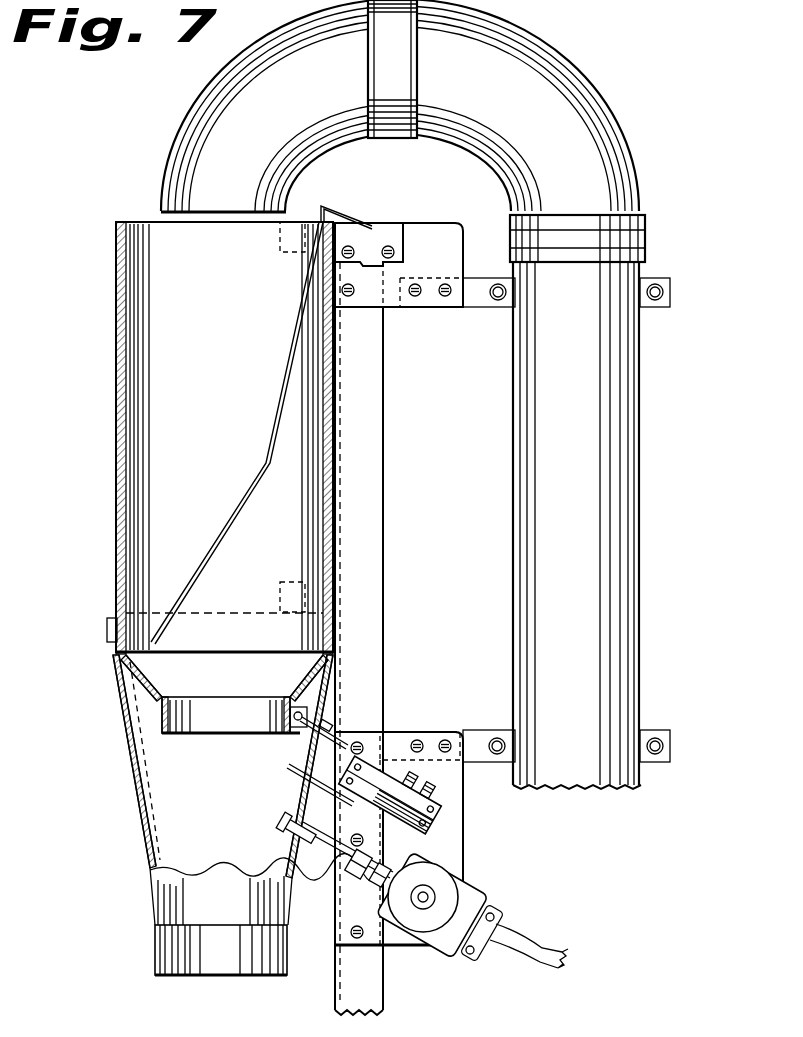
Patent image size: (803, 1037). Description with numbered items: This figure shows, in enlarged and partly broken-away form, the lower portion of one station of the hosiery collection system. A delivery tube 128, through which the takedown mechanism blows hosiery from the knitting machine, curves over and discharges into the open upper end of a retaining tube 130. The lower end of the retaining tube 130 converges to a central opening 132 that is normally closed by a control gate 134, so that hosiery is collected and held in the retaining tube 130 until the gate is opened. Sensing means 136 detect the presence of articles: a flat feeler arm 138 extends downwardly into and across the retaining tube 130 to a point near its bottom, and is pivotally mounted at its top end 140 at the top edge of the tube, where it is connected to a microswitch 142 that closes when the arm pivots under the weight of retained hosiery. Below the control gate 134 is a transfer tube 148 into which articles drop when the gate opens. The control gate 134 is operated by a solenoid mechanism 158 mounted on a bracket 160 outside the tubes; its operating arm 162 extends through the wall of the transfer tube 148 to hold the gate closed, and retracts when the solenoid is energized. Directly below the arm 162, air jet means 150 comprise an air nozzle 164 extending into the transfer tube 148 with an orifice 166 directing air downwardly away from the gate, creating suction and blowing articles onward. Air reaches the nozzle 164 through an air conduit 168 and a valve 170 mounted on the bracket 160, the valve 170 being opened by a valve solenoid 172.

The delivery tube 128 is at (630, 480).
The retaining tube 130 is at (116, 425).
The central opening 132 is at (135, 222).
The control gate 134 is at (190, 736).
The sensing means 136 is at (282, 264).
The feeler arm 138 is at (280, 394).
The top end 140 is at (350, 190).
The microswitch 142 is at (370, 226).
The transfer tube 148 is at (156, 955).
The air jet means 150 is at (318, 848).
The solenoid mechanism 158 is at (372, 770).
The bracket 160 is at (455, 838).
The operating arm 162 is at (305, 748).
The air nozzle 164 is at (316, 808).
The orifice 166 is at (298, 836).
The air conduit 168 is at (532, 972).
The valve 170 is at (430, 893).
The valve solenoid 172 is at (475, 898).